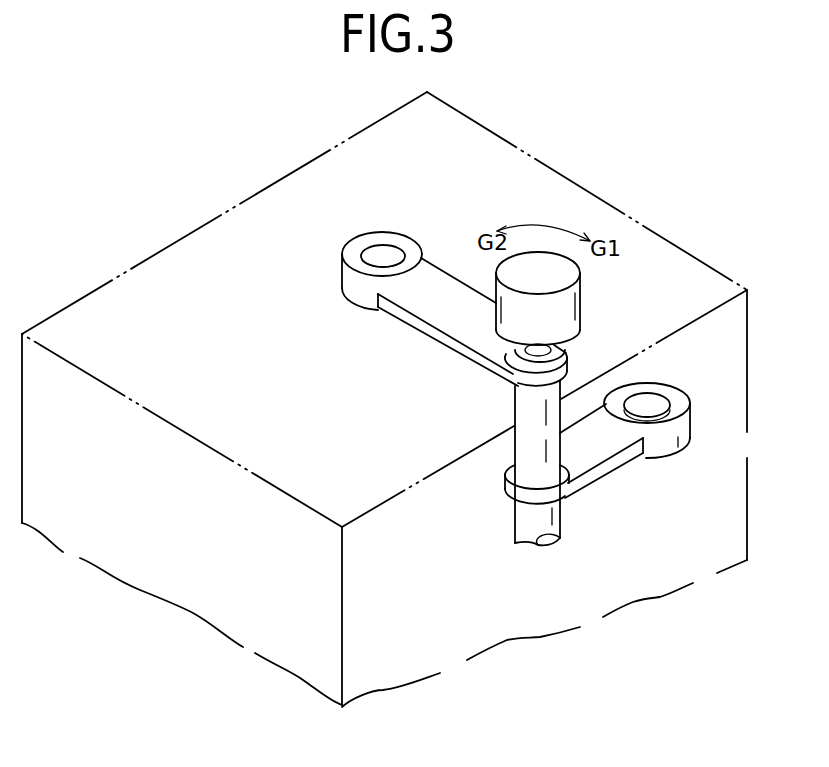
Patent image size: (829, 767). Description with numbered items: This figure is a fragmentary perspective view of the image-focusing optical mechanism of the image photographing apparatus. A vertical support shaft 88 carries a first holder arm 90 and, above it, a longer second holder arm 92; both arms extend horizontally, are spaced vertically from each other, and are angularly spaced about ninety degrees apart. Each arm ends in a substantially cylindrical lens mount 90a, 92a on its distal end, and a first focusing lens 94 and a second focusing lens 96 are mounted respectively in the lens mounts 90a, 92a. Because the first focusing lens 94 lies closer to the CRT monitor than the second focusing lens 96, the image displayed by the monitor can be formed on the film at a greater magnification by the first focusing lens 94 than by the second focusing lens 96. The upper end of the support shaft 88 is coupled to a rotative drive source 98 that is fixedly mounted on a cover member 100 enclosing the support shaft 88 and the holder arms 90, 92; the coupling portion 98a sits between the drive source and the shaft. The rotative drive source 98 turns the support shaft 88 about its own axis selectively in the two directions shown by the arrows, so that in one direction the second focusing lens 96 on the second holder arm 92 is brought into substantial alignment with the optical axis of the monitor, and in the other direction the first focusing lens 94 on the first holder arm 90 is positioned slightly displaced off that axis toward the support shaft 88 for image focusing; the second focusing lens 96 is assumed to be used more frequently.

The support shaft 88 is at (520, 442).
The first holder arm 90 is at (587, 476).
The lens mount 90a is at (683, 432).
The second holder arm 92 is at (433, 325).
The lens mount 92a is at (350, 287).
The first focusing lens 94 is at (657, 408).
The second focusing lens 96 is at (388, 255).
The rotative drive source 98 is at (576, 293).
The collar of cylindrical member 98a is at (546, 352).
The cover member 100 is at (527, 150).